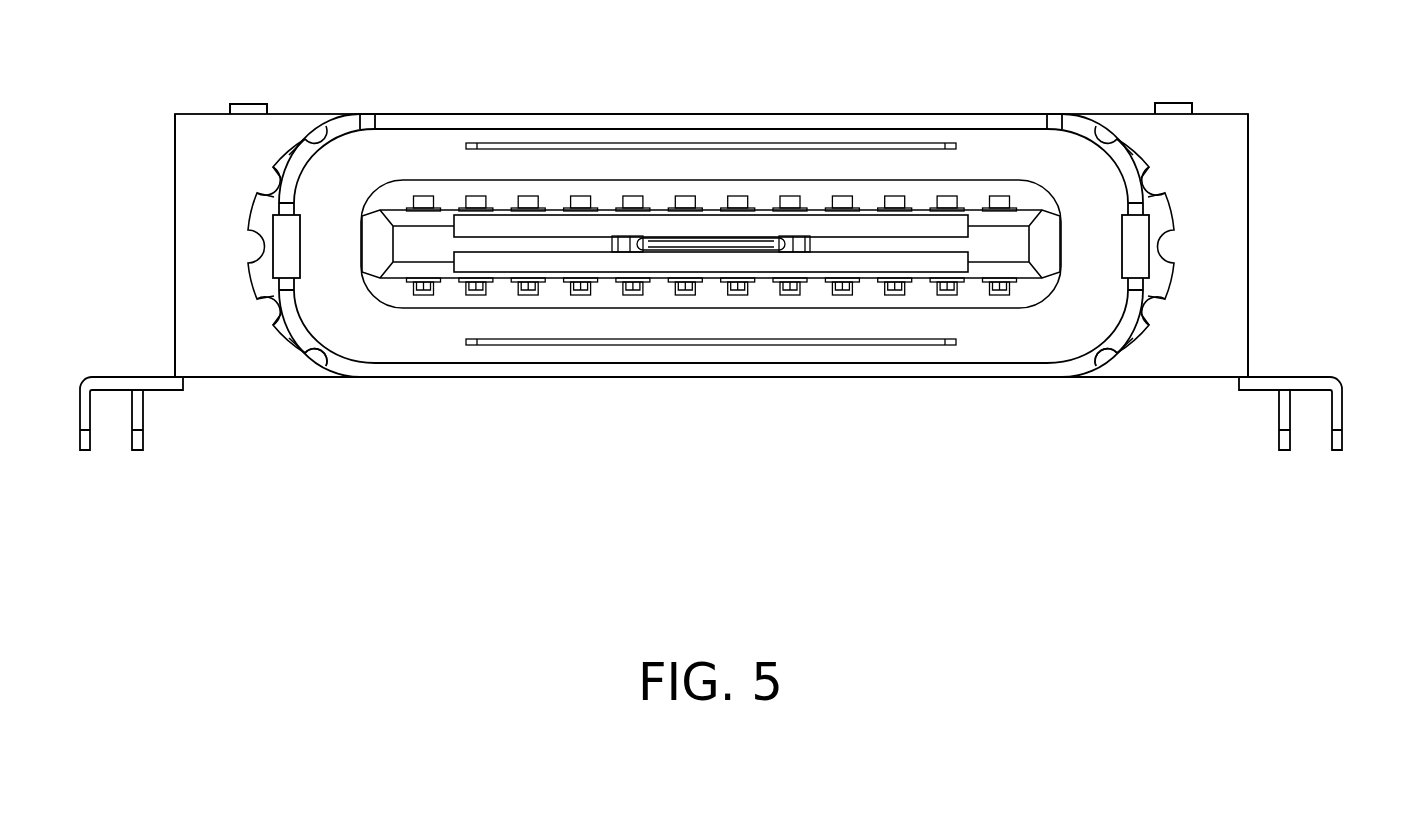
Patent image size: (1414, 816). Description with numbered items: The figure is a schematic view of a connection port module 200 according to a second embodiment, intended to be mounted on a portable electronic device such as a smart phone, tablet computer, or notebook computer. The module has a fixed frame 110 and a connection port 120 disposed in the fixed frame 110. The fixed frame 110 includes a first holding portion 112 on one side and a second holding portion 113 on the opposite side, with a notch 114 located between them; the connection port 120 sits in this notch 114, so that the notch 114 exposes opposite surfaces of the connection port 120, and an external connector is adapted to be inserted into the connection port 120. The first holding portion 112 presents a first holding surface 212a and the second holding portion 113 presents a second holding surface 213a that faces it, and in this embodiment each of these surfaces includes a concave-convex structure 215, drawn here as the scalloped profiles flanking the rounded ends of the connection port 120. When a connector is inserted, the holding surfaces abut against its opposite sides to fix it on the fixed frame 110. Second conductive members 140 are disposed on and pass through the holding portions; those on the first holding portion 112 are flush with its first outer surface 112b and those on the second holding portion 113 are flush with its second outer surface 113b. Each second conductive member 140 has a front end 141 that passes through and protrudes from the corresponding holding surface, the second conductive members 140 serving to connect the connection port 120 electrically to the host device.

The fixed frame 110 is at (146, 113).
The first holding portion 112 is at (207, 140).
The second holding portion 113 is at (1214, 140).
The first outer surface 112b is at (170, 246).
The second outer surface 113b is at (1252, 246).
The notch 114 is at (938, 395).
The connection port 120 is at (699, 100).
The second conductive member 140 is at (712, 345).
The front end 141 is at (288, 265).
The connection port module 200 is at (1388, 571).
The first holding surface 212a is at (322, 346).
The second holding surface 213a is at (1100, 346).
The concave-convex structure 215 is at (322, 182).